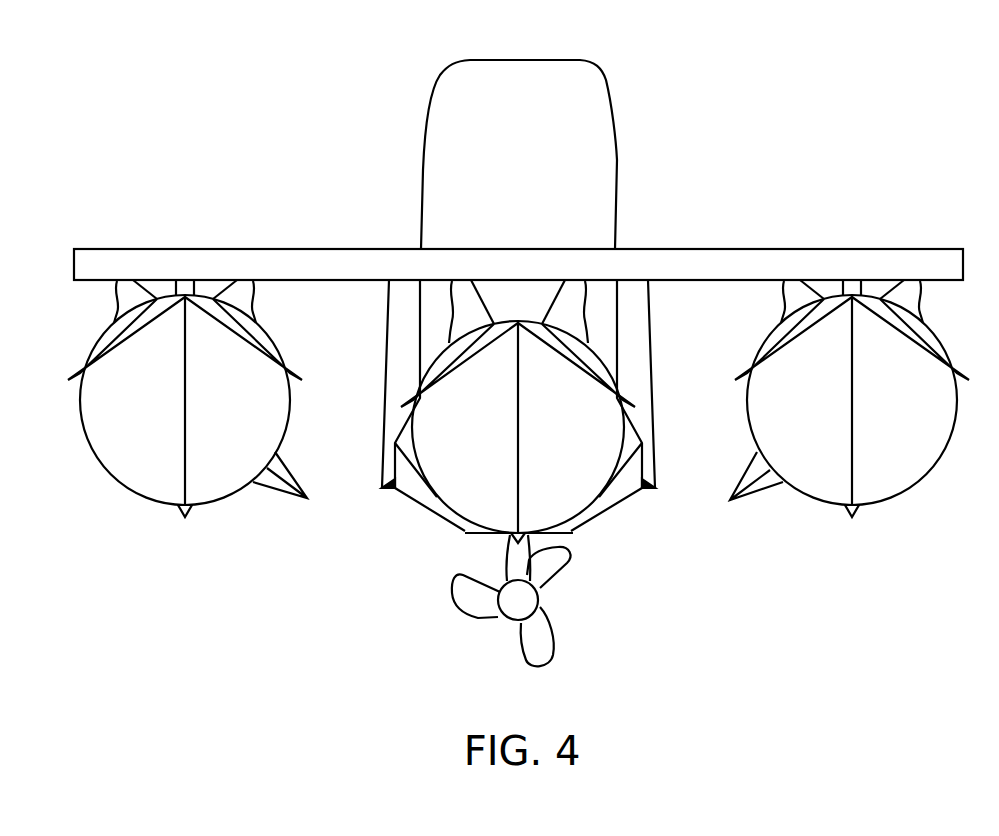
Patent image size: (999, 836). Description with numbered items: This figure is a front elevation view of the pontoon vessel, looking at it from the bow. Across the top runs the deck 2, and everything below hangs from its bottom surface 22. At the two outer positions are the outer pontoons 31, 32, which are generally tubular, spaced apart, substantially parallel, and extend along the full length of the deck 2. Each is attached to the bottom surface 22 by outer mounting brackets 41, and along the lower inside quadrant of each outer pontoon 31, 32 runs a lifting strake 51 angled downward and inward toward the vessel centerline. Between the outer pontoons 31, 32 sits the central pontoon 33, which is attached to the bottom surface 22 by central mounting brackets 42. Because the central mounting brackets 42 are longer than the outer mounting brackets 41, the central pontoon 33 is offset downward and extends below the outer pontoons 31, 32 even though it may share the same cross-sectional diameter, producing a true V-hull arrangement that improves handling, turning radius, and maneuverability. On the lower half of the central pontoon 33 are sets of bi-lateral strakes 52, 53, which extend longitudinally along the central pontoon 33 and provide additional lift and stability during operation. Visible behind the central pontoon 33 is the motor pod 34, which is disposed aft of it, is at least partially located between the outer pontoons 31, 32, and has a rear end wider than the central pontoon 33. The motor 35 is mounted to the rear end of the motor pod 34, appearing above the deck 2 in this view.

The deck 2 is at (874, 212).
The bottom surface 22 is at (729, 288).
The outer pontoon 31 is at (94, 476).
The outer pontoon 32 is at (940, 482).
The central pontoon 33 is at (582, 415).
The motor pod 34 is at (392, 343).
The motor 35 is at (515, 66).
The outer mounting bracket 41 is at (130, 295).
The central mounting bracket 42 is at (473, 312).
The lifting strake 51 is at (272, 481).
The bi-lateral strake 52 is at (405, 489).
The bi-lateral strake 53 is at (468, 535).